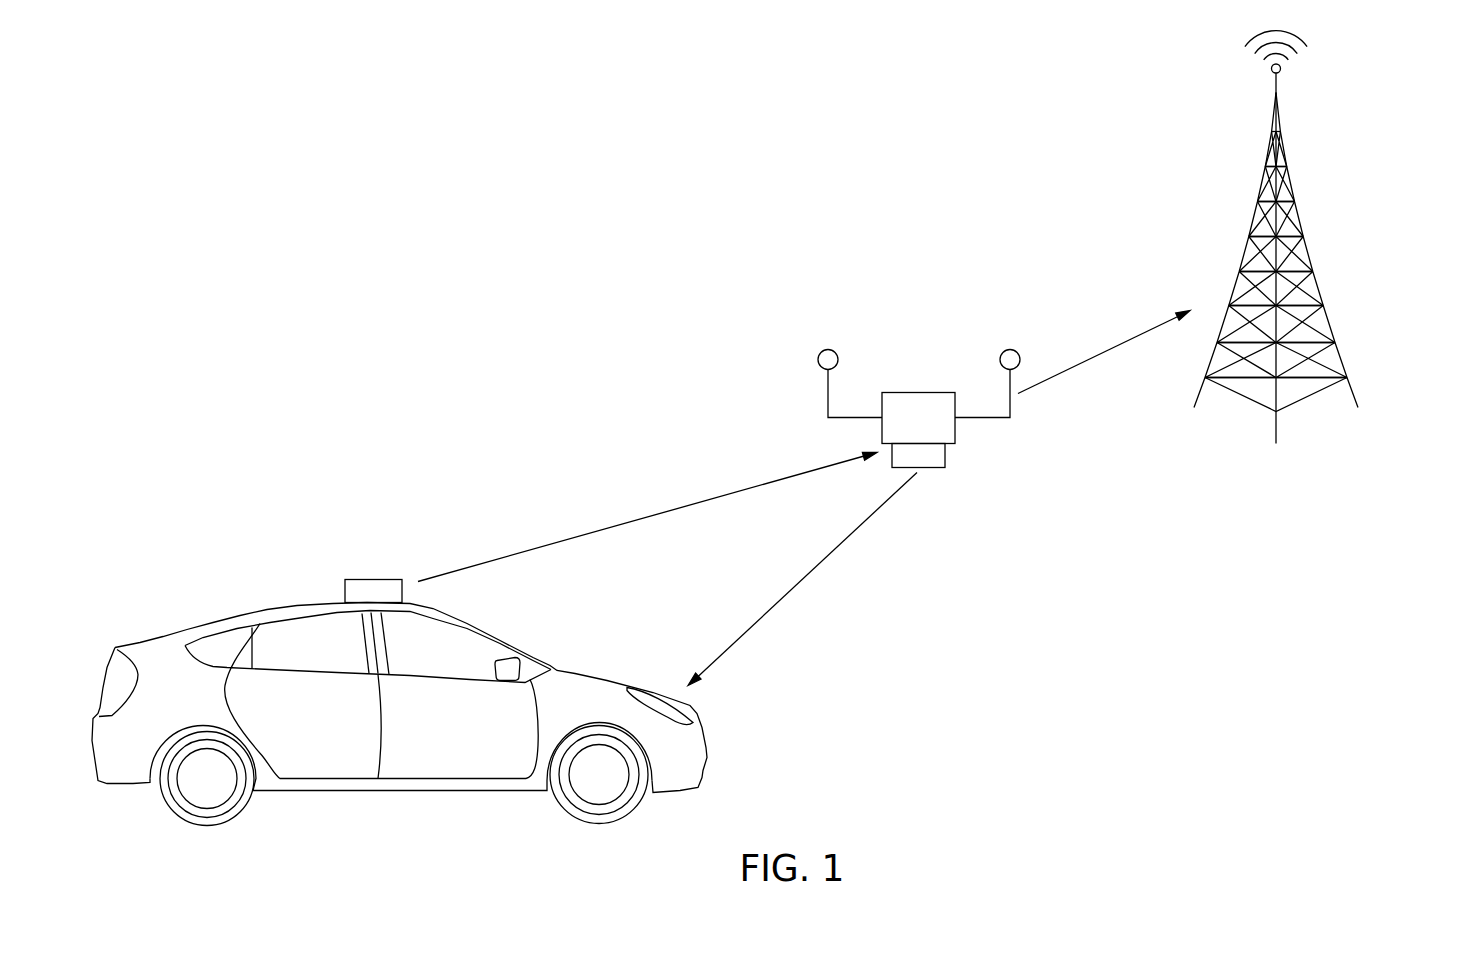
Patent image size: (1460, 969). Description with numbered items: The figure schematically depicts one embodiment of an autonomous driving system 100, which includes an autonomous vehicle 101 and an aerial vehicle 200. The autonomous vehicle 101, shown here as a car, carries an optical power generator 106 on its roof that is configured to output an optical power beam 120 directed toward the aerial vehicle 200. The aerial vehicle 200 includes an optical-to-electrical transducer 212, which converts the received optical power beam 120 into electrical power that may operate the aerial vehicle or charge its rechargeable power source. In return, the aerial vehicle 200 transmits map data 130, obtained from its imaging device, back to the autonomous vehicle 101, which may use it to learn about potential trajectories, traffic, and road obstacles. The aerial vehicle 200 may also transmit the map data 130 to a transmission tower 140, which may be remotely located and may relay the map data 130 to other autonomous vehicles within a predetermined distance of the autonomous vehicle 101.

The autonomous driving system 100 is at (425, 241).
The autonomous vehicle 101 is at (393, 682).
The optical power generator 106 is at (344, 590).
The optical power beam 120 is at (643, 515).
The map data 130 is at (823, 563).
The transmission tower 140 is at (1282, 139).
The aerial vehicle 200 is at (979, 401).
The optical-to-electrical transducer 212 is at (947, 450).